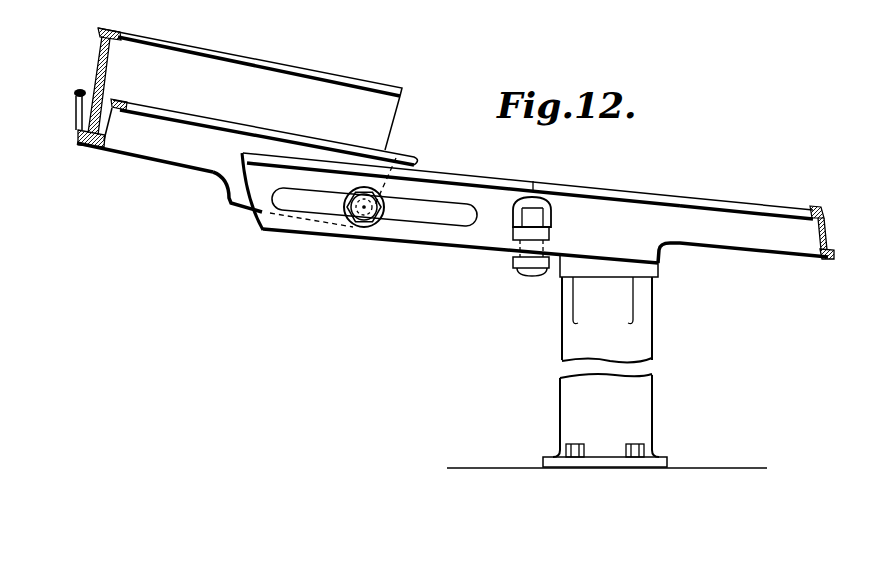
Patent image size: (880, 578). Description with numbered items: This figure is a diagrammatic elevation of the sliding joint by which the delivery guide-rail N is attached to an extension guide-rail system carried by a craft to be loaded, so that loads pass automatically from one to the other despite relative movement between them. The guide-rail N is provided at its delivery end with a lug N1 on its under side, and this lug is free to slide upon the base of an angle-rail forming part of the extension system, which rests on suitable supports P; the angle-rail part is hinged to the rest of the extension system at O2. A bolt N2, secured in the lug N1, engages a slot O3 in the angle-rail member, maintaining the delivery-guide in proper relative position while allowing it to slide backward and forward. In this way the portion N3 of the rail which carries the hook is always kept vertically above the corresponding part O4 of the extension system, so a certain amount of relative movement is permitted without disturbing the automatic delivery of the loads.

The guide-rail N is at (260, 94).
The lug N1 is at (247, 197).
The bolt N2 is at (363, 216).
The portion of the rail N3 is at (178, 117).
The hinge O2 is at (532, 232).
The slot O3 is at (438, 221).
The part of the extension system O4 is at (717, 205).
The supports P is at (637, 330).